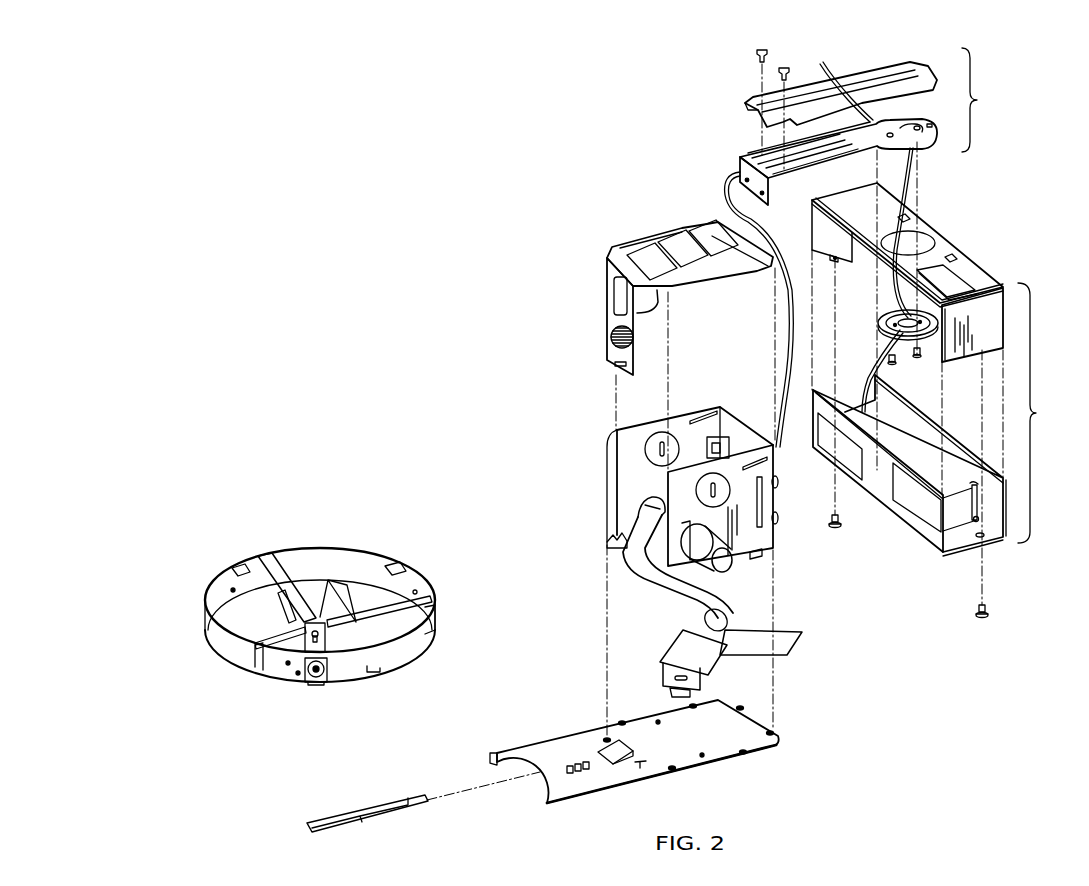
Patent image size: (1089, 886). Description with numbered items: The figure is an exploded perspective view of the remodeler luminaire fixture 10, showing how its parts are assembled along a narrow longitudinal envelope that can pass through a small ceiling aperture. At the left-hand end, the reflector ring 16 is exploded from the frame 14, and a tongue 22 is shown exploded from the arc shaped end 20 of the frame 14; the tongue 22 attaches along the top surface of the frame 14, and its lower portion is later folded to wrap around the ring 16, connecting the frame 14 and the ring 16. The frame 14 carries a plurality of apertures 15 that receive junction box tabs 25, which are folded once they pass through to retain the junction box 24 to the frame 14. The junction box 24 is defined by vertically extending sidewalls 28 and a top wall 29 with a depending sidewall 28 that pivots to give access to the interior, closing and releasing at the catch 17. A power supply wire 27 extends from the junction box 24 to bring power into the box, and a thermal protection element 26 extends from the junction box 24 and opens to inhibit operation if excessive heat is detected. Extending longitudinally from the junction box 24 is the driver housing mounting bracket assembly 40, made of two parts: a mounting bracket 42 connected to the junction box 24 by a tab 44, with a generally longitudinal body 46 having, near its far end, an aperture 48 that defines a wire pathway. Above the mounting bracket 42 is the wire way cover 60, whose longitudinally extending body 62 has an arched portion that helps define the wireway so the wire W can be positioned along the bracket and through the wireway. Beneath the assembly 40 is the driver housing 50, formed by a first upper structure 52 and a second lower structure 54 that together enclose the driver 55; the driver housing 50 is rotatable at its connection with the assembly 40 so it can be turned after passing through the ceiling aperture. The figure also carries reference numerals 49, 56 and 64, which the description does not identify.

The remodeler luminaire fixture 10 is at (315, 182).
The frame 14 is at (540, 718).
The apertures 15 is at (608, 738).
The reflector ring 16 is at (288, 515).
The catch 17 is at (600, 742).
The arc shaped end 20 is at (515, 797).
The tongue 22 is at (350, 785).
The junction box 24 is at (578, 440).
The junction box tabs 25 is at (618, 538).
The thermal protection element 26 is at (728, 563).
The power supply wire 27 is at (665, 580).
The sidewall 28 is at (590, 298).
The top wall 29 is at (650, 218).
The driver housing mounting bracket assembly 40 is at (986, 100).
The mounting bracket 42 is at (722, 172).
The tab 44 is at (770, 208).
The body 46 is at (843, 152).
The aperture 48 is at (908, 128).
The wire 49 is at (832, 100).
The driver housing 50 is at (1042, 413).
The first upper structure 52 is at (963, 258).
The second lower structure 54 is at (947, 548).
The driver 55 is at (928, 466).
The side flap 56 is at (925, 320).
The wire way cover 60 is at (872, 58).
The longitudinally extending body 62 is at (742, 103).
The screws 64 is at (787, 68).
The wire W is at (872, 360).